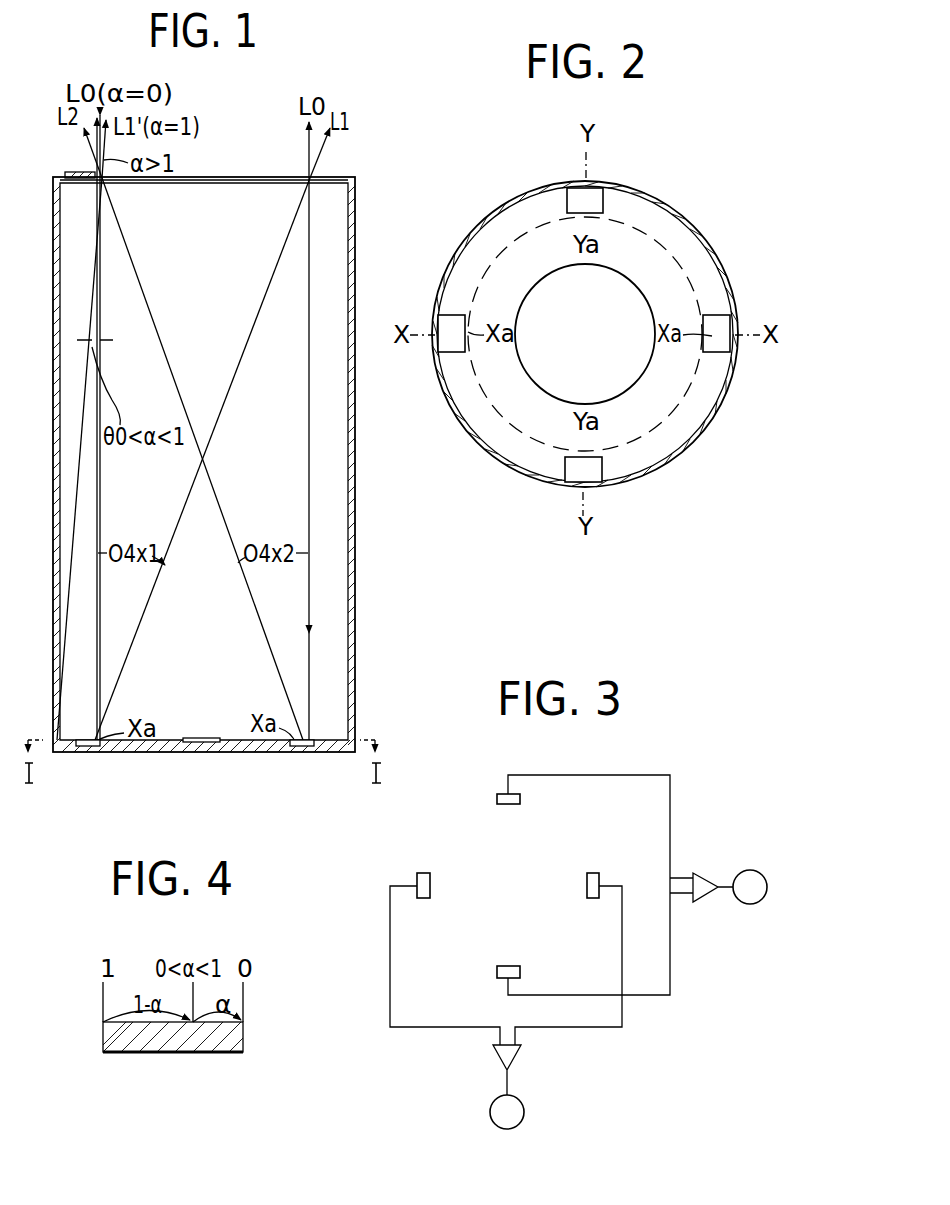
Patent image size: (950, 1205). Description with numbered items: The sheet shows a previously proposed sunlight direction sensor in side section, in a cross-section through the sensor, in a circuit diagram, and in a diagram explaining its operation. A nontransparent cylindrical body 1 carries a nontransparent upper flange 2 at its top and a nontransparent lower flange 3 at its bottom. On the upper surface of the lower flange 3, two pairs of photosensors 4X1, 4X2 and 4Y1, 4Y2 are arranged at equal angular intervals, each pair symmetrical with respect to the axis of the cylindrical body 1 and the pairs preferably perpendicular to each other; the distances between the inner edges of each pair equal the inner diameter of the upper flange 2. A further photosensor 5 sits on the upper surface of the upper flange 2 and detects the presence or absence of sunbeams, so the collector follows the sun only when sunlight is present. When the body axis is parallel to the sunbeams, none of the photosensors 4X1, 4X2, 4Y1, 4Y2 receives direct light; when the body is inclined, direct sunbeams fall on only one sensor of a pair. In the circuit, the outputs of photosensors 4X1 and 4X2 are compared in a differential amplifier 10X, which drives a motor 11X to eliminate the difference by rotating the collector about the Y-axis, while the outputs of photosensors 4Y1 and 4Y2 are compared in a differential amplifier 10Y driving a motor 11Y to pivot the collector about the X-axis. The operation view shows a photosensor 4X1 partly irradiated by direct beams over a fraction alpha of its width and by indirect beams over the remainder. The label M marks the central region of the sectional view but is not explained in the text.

In FIG. 1, the cylindrical body 1 is at (356, 248).
In FIG. 2, the cylindrical body 1 is at (668, 207).
In FIG. 1, the upper flange 2 is at (335, 180).
In FIG. 1, the lower flange 3 is at (318, 752).
In FIG. 2, the lower flange 3 is at (499, 414).
In FIG. 1, the photosensor 5 is at (72, 172).
In FIG. 1, the photosensor 4X1 is at (85, 740).
In FIG. 2, the photosensor 4X1 is at (447, 338).
In FIG. 3, the photosensor 4X1 is at (431, 886).
In FIG. 4, the photosensor 4X1 is at (169, 1045).
In FIG. 1, the photosensor 4X2 is at (300, 740).
In FIG. 2, the photosensor 4X2 is at (726, 347).
In FIG. 3, the photosensor 4X2 is at (587, 886).
In FIG. 1, the photosensor 4Y1 is at (202, 738).
In FIG. 2, the photosensor 4Y1 is at (580, 188).
In FIG. 3, the photosensor 4Y1 is at (506, 805).
In FIG. 2, the photosensor 4Y2 is at (590, 480).
In FIG. 3, the photosensor 4Y2 is at (506, 966).
In FIG. 2, the mirror / central aperture M is at (685, 405).
In FIG. 3, the differential amplifier 10X is at (517, 1058).
In FIG. 3, the differential amplifier 10Y is at (709, 899).
In FIG. 3, the motor 11X is at (525, 1113).
In FIG. 3, the motor 11Y is at (750, 870).